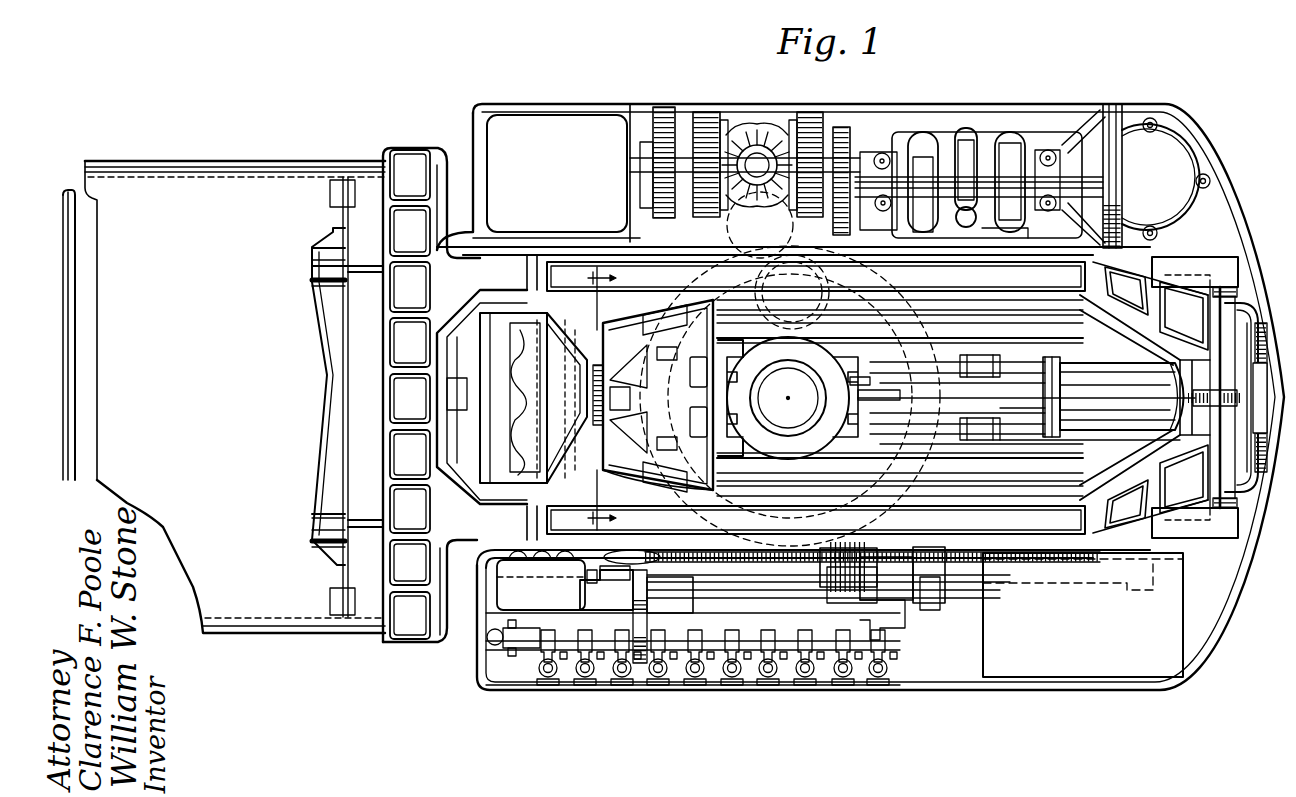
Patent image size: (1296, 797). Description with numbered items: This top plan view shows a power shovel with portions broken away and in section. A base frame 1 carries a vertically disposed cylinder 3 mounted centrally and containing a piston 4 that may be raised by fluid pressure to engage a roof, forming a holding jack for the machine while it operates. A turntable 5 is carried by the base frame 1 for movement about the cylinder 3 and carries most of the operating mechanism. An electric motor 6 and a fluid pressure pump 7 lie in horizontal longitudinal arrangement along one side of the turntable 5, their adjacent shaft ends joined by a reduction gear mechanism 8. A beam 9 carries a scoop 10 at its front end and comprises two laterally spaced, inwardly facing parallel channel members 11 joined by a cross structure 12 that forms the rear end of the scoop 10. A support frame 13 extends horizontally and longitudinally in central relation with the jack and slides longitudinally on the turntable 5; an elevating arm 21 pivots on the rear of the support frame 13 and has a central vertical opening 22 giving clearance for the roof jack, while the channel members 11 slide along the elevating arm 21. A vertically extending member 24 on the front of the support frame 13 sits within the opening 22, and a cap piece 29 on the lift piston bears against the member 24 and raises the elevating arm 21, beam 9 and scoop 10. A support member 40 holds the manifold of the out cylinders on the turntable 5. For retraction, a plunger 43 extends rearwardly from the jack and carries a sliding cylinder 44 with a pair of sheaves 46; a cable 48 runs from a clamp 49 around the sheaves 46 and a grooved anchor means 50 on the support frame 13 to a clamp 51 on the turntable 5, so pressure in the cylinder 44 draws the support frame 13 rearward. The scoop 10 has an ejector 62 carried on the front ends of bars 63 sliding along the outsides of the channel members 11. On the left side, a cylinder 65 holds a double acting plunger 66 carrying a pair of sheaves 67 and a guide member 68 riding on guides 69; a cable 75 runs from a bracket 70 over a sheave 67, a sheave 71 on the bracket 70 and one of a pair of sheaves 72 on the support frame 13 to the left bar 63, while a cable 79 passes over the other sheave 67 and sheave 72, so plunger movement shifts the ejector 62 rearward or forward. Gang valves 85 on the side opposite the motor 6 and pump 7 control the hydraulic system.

The base frame 1 is at (1062, 690).
The vertically disposed cylinder 3 is at (812, 355).
The piston 4 is at (608, 399).
The turntable 5 is at (1215, 640).
The electric motor 6 is at (545, 107).
The fluid pressure pump 7 is at (992, 135).
The reduction gear mechanism 8 is at (762, 130).
The beam 9 is at (1215, 258).
The scoop 10 is at (242, 157).
The channel members 11 is at (1240, 275).
The cross structure 12 is at (413, 150).
The support frame 13 is at (1113, 345).
The elevating arm 21 is at (1145, 266).
The central vertical opening 22 is at (533, 398).
The vertically extending member 24 is at (525, 285).
The cap piece 29 is at (653, 379).
The support member 40 is at (1250, 348).
The plunger 43 is at (958, 388).
The cylinder 44 is at (1082, 378).
The sheaves 46 is at (1172, 364).
The cable 48 is at (1098, 432).
The clamp 49 is at (985, 440).
The grooved anchor means 50 is at (1180, 392).
The clamp 51 is at (982, 372).
The ejector 62 is at (322, 356).
The bars 63 is at (357, 275).
The cylinder 65 is at (968, 585).
The double acting plunger 66 is at (806, 590).
The sheaves 67 is at (880, 570).
The guide member 68 is at (910, 630).
The guides 69 is at (758, 597).
The bracket 70 is at (615, 575).
The sheave 71 is at (633, 556).
The sheaves 72 is at (1218, 545).
The cable 75 is at (872, 549).
The cable 79 is at (955, 560).
The gang valves 85 is at (480, 688).